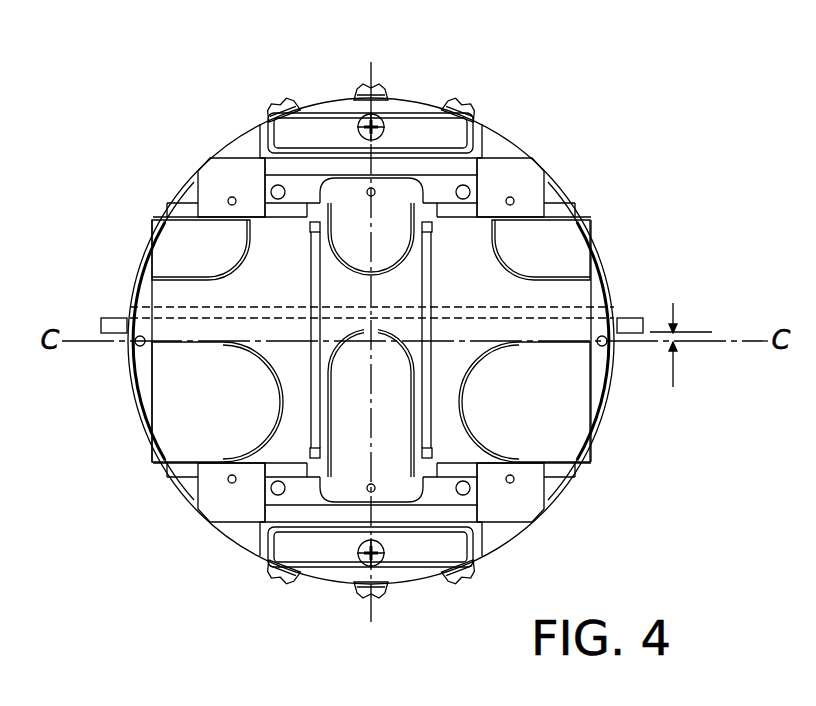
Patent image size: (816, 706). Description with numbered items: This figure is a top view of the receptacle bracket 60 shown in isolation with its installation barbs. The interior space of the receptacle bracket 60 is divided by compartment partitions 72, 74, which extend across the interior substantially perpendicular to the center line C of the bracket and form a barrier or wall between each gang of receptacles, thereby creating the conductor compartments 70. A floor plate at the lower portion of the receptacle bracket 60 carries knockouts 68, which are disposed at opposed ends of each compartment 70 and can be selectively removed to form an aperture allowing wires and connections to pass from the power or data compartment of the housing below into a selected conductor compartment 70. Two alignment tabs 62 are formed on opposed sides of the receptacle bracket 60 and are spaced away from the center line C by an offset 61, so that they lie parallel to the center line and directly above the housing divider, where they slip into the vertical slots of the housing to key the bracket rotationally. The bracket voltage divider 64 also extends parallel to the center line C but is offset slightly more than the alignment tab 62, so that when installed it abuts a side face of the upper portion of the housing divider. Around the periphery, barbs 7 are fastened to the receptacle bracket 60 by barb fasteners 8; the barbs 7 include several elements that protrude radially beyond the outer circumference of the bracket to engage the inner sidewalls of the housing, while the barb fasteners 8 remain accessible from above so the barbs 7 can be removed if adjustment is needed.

The barb 7 is at (357, 86).
The barb fastener 8 is at (388, 122).
The receptacle bracket 60 is at (529, 142).
The offset 61 is at (674, 368).
The alignment tab 62 is at (103, 319).
The bracket voltage divider 64 is at (290, 307).
The knockout 68 is at (177, 258).
The conductor compartment 70 is at (443, 372).
The compartment partition 72 is at (431, 288).
The compartment partition 74 is at (310, 253).